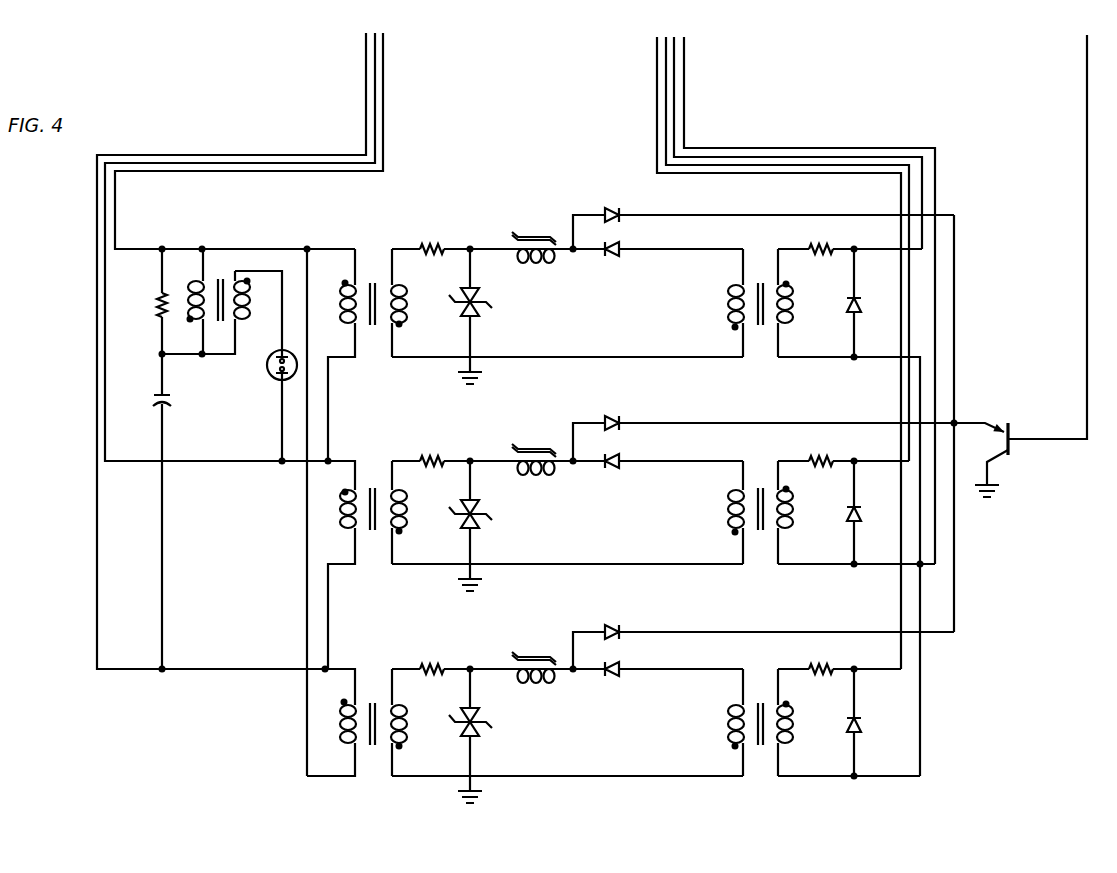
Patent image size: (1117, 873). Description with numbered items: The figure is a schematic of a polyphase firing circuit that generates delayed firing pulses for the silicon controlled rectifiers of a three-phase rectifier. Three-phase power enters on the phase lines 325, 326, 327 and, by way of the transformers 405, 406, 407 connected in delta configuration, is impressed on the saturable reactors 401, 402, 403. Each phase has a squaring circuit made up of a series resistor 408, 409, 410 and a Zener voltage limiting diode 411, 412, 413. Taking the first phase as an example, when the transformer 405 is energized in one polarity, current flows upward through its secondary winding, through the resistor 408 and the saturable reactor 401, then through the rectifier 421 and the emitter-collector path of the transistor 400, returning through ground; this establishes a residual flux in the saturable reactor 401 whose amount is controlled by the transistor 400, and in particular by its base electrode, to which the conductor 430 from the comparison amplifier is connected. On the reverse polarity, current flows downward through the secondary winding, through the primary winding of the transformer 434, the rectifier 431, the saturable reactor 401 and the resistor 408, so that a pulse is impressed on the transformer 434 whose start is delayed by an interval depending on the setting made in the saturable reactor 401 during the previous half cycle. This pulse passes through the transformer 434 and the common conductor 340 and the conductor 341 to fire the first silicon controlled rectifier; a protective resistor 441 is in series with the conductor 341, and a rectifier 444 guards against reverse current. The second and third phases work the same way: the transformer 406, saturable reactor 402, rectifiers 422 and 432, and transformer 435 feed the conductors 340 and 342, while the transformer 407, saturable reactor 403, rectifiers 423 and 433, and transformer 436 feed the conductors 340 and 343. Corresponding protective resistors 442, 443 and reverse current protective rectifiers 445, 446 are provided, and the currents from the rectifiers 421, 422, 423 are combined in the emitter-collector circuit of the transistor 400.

The phase line 325 is at (383, 137).
The phase line 326 is at (375, 116).
The phase line 327 is at (366, 93).
The common conductor 340 is at (684, 108).
The conductor 341 is at (674, 128).
The conductor 342 is at (666, 98).
The conductor 343 is at (657, 118).
The transistor 400 is at (1012, 430).
The saturable reactor 401 is at (536, 263).
The saturable reactor 402 is at (540, 472).
The saturable reactor 403 is at (536, 684).
The transformer 405 is at (372, 336).
The transformer 406 is at (372, 543).
The transformer 407 is at (372, 758).
The series resistor 408 is at (432, 243).
The series resistor 409 is at (433, 456).
The series resistor 410 is at (432, 665).
The Zener voltage limiting diode 411 is at (462, 307).
The Zener voltage limiting diode 412 is at (462, 518).
The Zener voltage limiting diode 413 is at (458, 723).
The rectifier 421 is at (610, 211).
The rectifier 422 is at (613, 421).
The rectifier 423 is at (612, 625).
The conductor 430 is at (1087, 100).
The rectifier 431 is at (613, 258).
The rectifier 432 is at (612, 467).
The rectifier 433 is at (612, 678).
The transformer 434 is at (763, 340).
The transformer 435 is at (763, 548).
The transformer 436 is at (760, 760).
The protective resistor 441 is at (818, 243).
The protective resistor 442 is at (821, 455).
The protective resistor 443 is at (820, 665).
The rectifier 444 is at (846, 307).
The reverse current protective rectifier 445 is at (845, 513).
The reverse current protective rectifier 446 is at (846, 728).